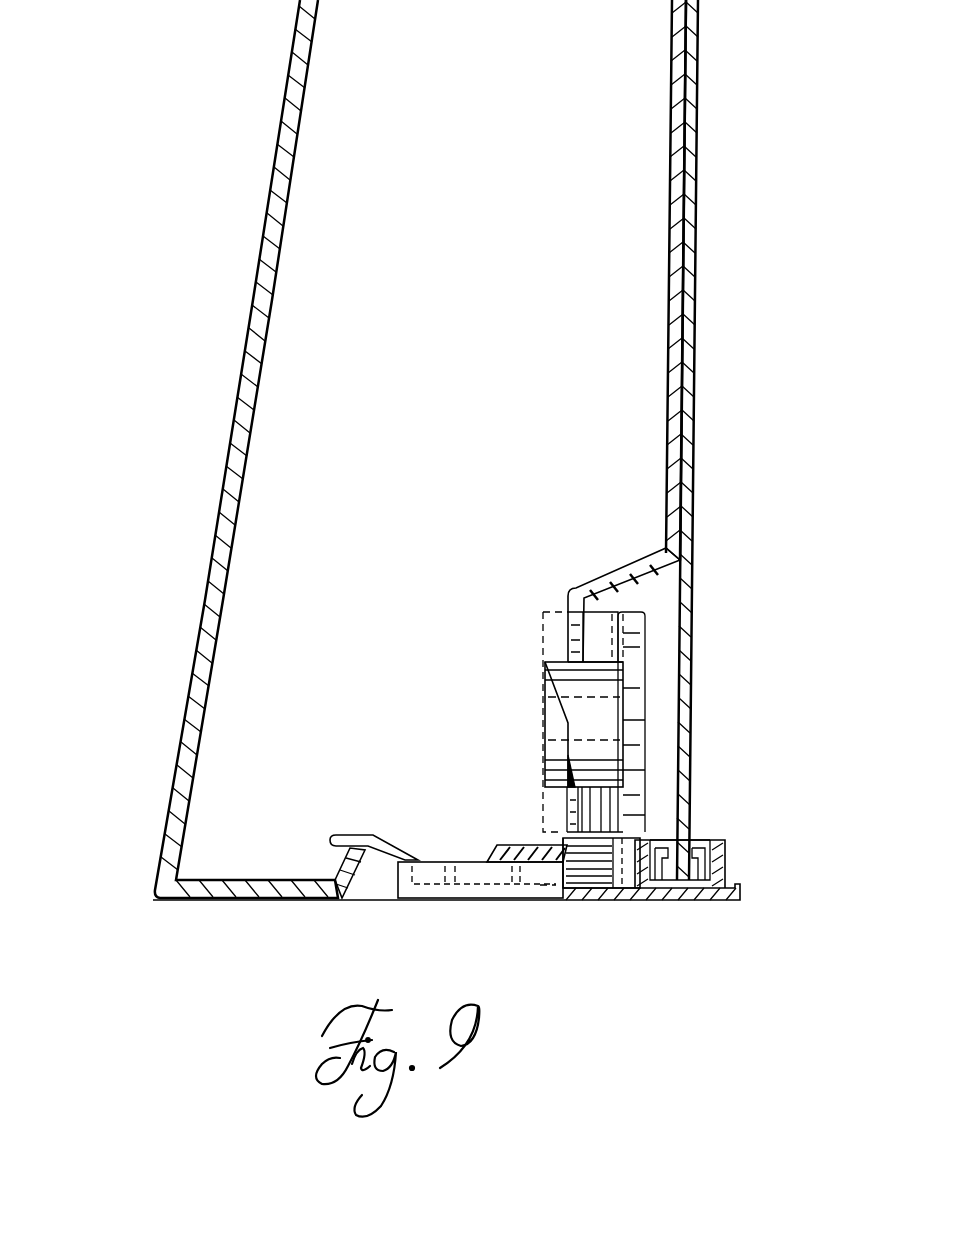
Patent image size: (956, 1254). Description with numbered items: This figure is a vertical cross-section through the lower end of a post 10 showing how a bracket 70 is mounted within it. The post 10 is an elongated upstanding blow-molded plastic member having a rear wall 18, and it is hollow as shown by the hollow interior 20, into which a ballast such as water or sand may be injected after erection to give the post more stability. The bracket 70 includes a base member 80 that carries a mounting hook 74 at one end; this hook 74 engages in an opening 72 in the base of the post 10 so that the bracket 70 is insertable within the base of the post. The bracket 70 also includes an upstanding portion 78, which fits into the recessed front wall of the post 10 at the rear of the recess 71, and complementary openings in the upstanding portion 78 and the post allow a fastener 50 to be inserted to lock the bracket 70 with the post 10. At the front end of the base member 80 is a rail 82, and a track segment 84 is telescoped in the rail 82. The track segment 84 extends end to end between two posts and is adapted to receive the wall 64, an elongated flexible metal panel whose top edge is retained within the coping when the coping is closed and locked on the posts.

The post 10 is at (217, 528).
The rear wall 18 is at (232, 455).
The hollow interior 20 is at (672, 410).
The fastener 50 is at (637, 708).
The wall 64 is at (695, 487).
The bracket 70 is at (644, 903).
The recess 71 is at (643, 570).
The opening 72 is at (352, 873).
The hook 74 is at (392, 847).
The upstanding portion 78 is at (604, 625).
The base member 80 is at (550, 900).
The rail 82 is at (727, 870).
The track segment 84 is at (705, 840).